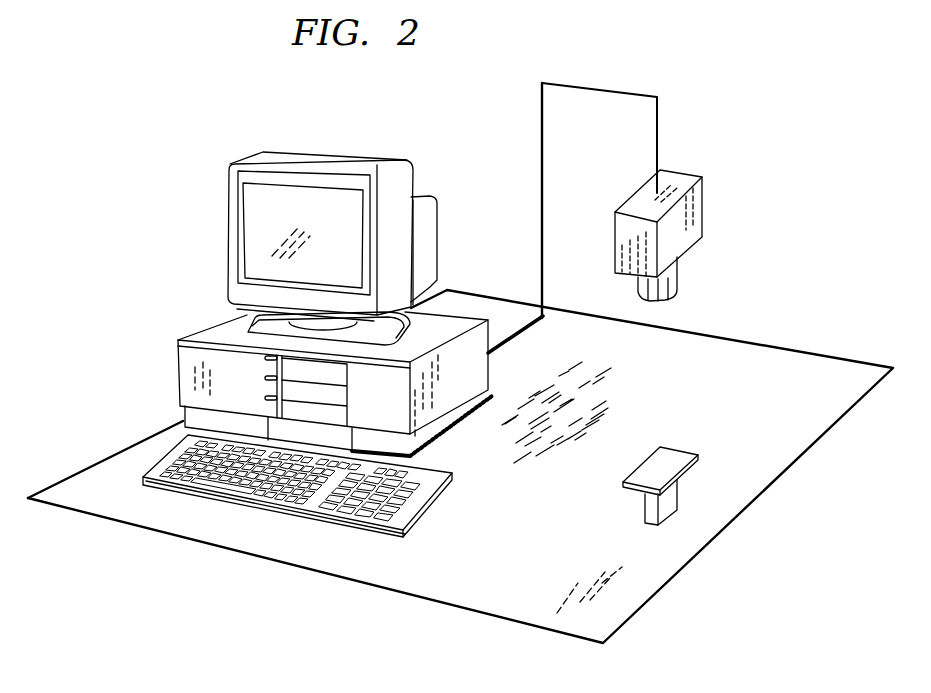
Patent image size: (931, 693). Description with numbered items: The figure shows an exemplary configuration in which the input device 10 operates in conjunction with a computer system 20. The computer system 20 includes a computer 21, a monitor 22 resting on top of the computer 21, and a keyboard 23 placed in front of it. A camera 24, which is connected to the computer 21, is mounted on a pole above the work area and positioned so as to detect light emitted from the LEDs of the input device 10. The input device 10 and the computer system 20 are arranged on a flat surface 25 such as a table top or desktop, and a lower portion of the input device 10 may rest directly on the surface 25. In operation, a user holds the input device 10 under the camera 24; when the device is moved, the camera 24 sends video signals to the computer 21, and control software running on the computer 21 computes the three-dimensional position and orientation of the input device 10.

The input device 10 is at (687, 453).
The computer system 20 is at (156, 271).
The computer 21 is at (183, 365).
The monitor 22 is at (228, 173).
The keyboard 23 is at (410, 517).
The camera 24 is at (702, 197).
The flat surface 25 is at (510, 603).